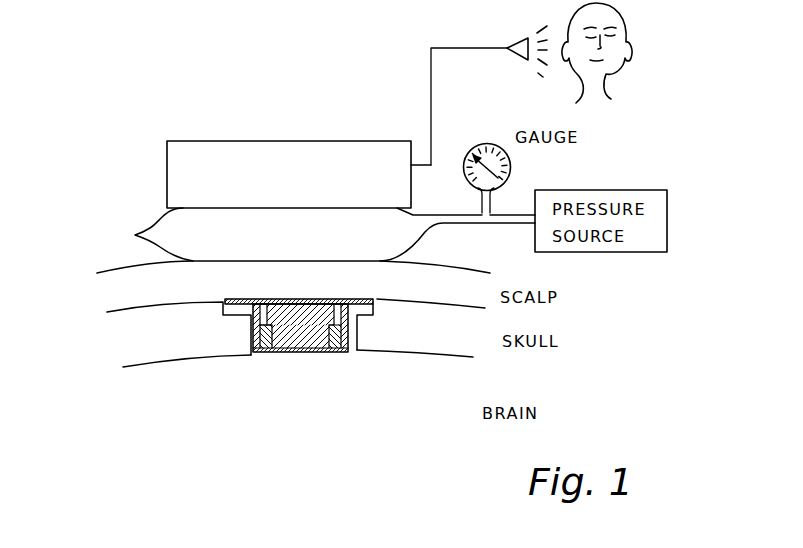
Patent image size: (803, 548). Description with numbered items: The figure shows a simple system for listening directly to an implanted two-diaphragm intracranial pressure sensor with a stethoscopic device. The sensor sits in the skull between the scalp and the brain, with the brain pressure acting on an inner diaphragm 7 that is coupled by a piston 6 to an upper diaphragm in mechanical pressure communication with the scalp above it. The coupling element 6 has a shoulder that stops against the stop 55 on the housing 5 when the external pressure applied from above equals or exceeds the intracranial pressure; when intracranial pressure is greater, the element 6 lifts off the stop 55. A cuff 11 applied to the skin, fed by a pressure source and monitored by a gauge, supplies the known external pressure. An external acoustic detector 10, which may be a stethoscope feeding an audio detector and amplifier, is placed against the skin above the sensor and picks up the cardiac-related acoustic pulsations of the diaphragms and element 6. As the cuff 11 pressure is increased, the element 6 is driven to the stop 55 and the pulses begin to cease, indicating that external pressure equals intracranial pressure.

The external acoustic detector 10 is at (167, 160).
The cuff 11 is at (182, 228).
The housing 5 is at (350, 326).
The piston 6 is at (283, 352).
The inner diaphragm 7 is at (333, 352).
The stop 55 is at (275, 327).